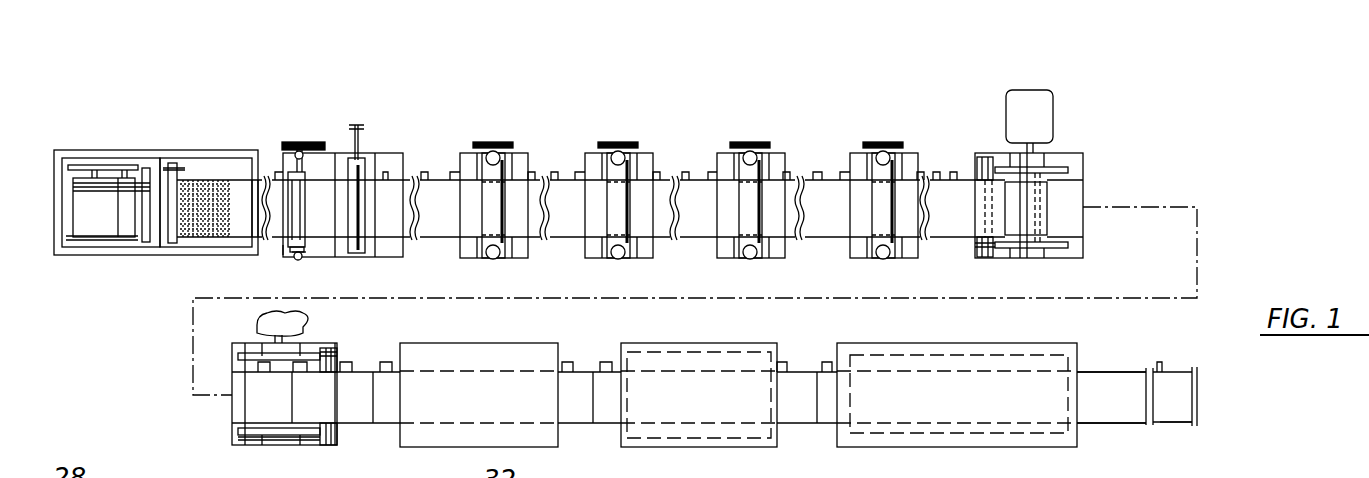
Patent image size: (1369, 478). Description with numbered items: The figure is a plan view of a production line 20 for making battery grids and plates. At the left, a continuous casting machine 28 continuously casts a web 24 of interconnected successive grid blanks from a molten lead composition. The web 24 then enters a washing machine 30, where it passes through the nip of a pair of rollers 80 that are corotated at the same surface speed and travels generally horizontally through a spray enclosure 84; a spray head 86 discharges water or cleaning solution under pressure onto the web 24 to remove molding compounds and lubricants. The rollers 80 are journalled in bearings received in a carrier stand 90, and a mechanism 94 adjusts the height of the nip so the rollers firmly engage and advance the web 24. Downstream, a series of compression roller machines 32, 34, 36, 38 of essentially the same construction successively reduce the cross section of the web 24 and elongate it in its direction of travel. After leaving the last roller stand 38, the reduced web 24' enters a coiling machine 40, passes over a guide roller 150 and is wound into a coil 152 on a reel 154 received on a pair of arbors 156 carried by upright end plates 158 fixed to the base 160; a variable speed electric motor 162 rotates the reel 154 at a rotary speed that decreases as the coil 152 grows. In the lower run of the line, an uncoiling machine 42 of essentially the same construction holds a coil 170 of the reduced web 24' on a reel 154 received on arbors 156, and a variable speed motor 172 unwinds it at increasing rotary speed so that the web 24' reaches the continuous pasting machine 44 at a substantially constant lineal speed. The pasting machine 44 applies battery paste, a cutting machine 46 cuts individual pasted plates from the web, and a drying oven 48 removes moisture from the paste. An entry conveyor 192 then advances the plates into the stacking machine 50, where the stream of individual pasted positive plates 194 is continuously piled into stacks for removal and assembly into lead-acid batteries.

The production line 20 is at (700, 68).
The web 24 is at (604, 288).
The reduced web 24' is at (951, 155).
The continuous casting machine 28 is at (122, 148).
The washing machine 30 is at (335, 127).
The compression roller machine 32 is at (492, 132).
The compression roller machine 34 is at (625, 133).
The compression roller machine 36 is at (747, 132).
The compression roller machine 38 is at (880, 132).
The coiling machine 40 is at (1085, 142).
The uncoiling machine 42 is at (223, 340).
The continuous pasting machine 44 is at (473, 340).
The cutting machine 46 is at (697, 338).
The drying oven 48 is at (945, 337).
The stacking machine 50 is at (1183, 362).
The rollers 80 is at (283, 182).
The spray enclosure 84 is at (363, 158).
The spray head 86 is at (357, 252).
The carrier stand 90 is at (283, 250).
The mechanism for adjusting the height of the nip 94 is at (295, 258).
The guide roller 150 is at (975, 247).
The coil 152 is at (1047, 197).
The reel 154 is at (1063, 175).
The arbors 156 is at (1027, 167).
The upright end plates 158 is at (1053, 152).
The base 160 is at (1072, 227).
The variable speed electric motor 162 is at (1043, 88).
The coil 170 is at (247, 370).
The variable speed motor 172 is at (257, 320).
The entry conveyor 192 is at (1110, 370).
The individual pasted positive plates 194 is at (1170, 420).